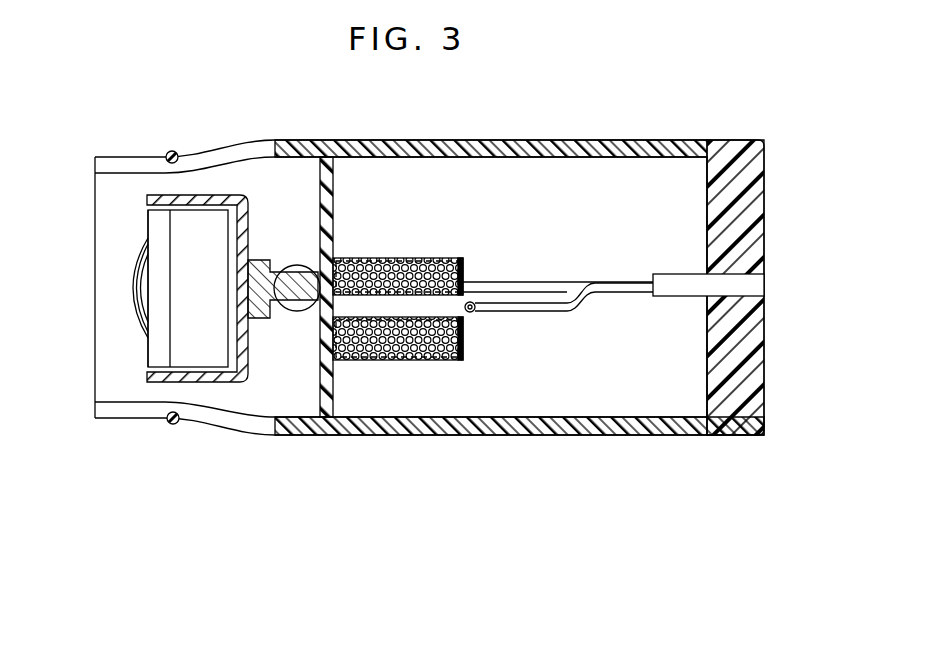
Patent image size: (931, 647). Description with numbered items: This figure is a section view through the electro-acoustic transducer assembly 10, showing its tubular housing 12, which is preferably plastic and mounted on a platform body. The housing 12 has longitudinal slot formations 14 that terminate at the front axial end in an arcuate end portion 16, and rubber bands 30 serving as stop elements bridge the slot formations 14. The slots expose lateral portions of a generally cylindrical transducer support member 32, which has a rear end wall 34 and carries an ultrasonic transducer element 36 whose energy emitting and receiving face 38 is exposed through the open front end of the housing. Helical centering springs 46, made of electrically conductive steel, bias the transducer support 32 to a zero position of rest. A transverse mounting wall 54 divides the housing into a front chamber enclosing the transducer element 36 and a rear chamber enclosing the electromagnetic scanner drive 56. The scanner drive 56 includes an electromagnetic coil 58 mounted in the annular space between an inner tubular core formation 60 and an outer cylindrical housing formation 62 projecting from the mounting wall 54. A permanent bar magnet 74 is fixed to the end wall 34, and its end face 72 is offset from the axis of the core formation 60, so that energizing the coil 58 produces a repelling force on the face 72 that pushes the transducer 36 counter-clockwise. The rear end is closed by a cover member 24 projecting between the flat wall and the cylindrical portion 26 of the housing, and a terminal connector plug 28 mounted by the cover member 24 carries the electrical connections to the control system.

The electro-acoustic transducer assembly 10 is at (619, 105).
The tubular housing 12 is at (514, 132).
The slot formations 14 is at (229, 157).
The arcuate end portion 16 is at (97, 350).
The cover member 24 is at (752, 182).
The cylindrical portion 26 is at (537, 421).
The terminal connector plug 28 is at (747, 285).
The rubber bands 30 is at (172, 150).
The transducer support member 32 is at (197, 383).
The rear end wall 34 is at (244, 365).
The ultrasonic transducer element 36 is at (202, 294).
The energy emitting and receiving face 38 is at (147, 344).
The helical centering springs 46 is at (130, 269).
The transverse mounting wall 54 is at (331, 193).
The electromagnetic scanner drive 56 is at (308, 178).
The electromagnetic coil 58 is at (410, 362).
The inner tubular core formation 60 is at (465, 317).
The outer cylindrical housing formation 62 is at (450, 258).
The end face 72 is at (295, 262).
The permanent bar magnet 74 is at (285, 295).